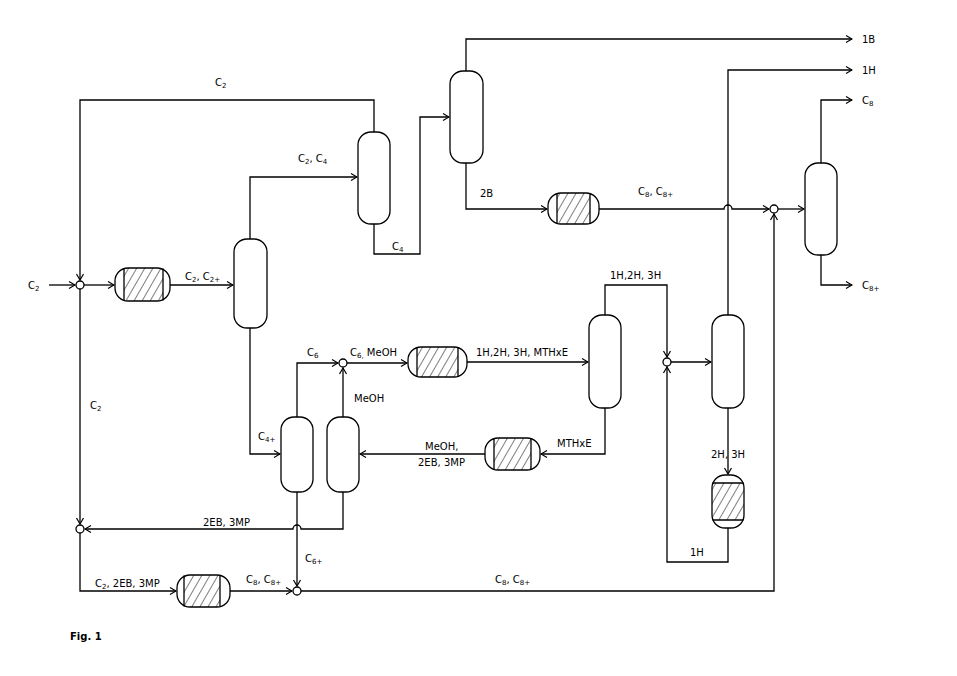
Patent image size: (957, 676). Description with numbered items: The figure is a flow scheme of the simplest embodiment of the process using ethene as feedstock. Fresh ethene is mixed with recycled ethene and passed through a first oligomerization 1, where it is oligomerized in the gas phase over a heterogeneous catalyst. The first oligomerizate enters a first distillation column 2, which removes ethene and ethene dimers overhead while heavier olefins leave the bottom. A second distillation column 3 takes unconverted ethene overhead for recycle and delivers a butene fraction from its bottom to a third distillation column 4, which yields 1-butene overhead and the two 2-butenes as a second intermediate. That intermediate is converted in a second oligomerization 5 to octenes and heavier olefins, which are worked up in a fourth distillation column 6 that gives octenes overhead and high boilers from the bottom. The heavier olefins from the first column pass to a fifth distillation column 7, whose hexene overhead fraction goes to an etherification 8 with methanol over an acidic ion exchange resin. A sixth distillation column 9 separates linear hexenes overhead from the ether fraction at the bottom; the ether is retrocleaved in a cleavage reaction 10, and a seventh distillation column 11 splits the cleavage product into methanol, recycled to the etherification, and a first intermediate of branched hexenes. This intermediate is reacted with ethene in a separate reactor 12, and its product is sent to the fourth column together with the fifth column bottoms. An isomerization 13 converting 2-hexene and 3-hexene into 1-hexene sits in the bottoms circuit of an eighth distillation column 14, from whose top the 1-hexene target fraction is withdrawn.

The first oligomerization 1 is at (142, 284).
The first distillation column 2 is at (250, 283).
The second distillation column 3 is at (374, 178).
The third distillation column 4 is at (466, 117).
The second oligomerization 5 is at (573, 208).
The fourth distillation column 6 is at (821, 209).
The fifth distillation column 7 is at (297, 454).
The etherification 8 is at (437, 362).
The sixth distillation column 9 is at (605, 361).
The cleavage reaction 10 is at (512, 454).
The seventh distillation column 11 is at (343, 454).
The reactor 12 is at (203, 591).
The isomerization 13 is at (728, 501).
The eighth distillation column 14 is at (728, 361).